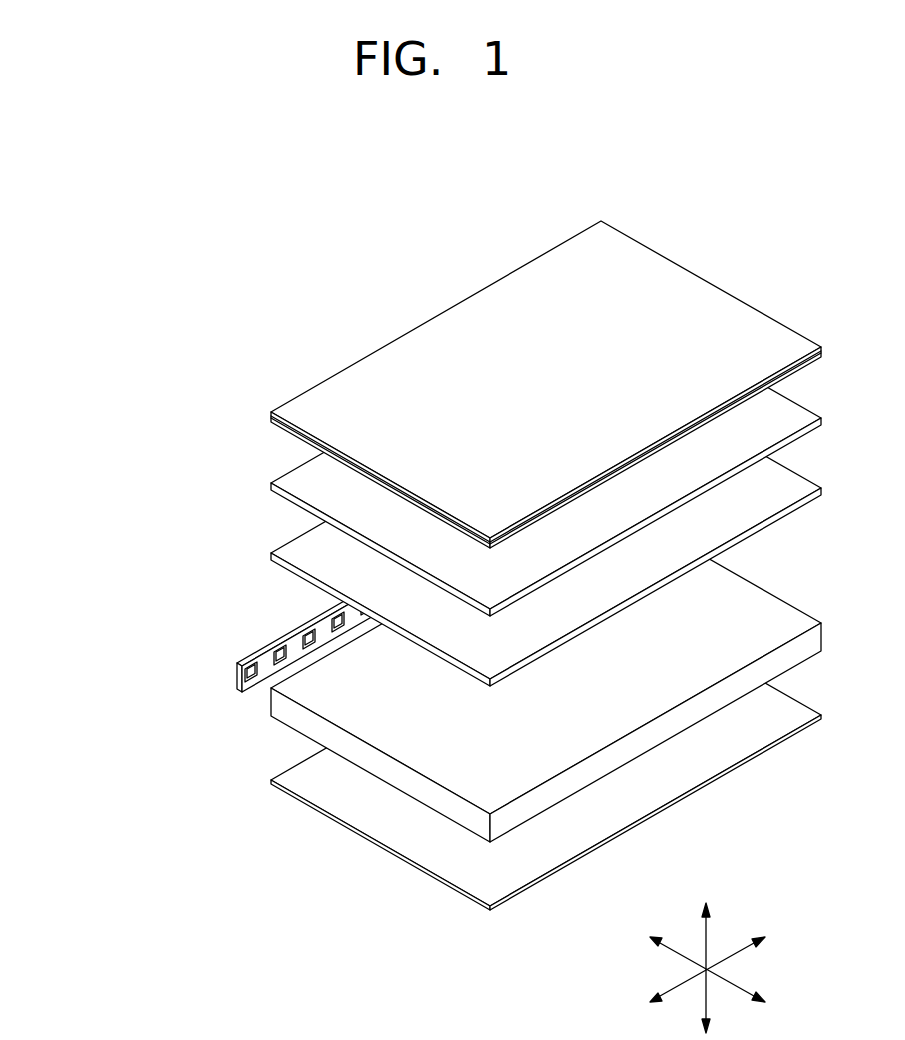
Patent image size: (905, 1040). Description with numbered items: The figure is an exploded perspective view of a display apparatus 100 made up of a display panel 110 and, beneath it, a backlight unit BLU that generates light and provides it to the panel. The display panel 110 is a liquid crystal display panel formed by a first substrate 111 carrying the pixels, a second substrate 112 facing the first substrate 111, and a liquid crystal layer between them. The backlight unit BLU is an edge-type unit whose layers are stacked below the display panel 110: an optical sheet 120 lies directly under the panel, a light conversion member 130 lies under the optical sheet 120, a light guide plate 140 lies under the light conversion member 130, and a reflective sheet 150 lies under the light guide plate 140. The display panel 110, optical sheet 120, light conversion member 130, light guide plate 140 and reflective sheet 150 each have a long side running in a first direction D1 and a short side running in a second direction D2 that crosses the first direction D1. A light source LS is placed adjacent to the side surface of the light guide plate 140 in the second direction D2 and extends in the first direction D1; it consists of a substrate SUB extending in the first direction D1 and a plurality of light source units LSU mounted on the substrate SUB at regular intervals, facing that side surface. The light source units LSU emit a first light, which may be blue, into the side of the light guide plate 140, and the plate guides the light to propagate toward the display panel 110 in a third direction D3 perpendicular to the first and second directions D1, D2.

The display apparatus 100 is at (433, 558).
The display panel 110 is at (461, 384).
The first substrate 111 is at (270, 418).
The second substrate 112 is at (287, 408).
The optical sheet 120 is at (461, 454).
The light conversion member 130 is at (303, 548).
The light guide plate 140 is at (310, 727).
The reflective sheet 150 is at (310, 800).
The backlight unit BLU is at (433, 601).
The light source LS is at (266, 638).
The substrate SUB is at (240, 680).
The light source units LSU is at (254, 678).
The first direction D1 is at (723, 959).
The second direction D2 is at (723, 979).
The third direction D3 is at (706, 954).